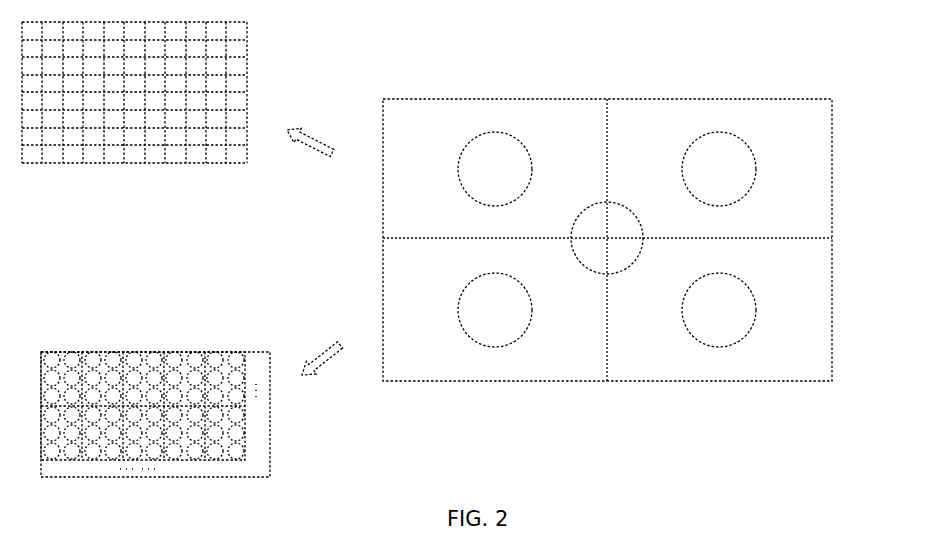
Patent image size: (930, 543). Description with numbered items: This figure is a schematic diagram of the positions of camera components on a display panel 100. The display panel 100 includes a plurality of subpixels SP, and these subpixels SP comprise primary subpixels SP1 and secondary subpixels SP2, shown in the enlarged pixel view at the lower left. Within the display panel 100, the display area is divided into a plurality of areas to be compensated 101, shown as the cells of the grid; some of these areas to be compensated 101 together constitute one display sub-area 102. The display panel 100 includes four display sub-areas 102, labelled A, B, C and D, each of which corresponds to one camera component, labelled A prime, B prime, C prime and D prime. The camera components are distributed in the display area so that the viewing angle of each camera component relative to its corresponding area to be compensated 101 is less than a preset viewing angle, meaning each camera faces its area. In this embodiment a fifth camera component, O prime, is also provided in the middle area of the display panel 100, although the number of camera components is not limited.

The display panel 100 is at (697, 99).
The area to be compensated 101 is at (157, 153).
The display sub-area 102 is at (247, 93).
The subpixel SP is at (35, 323).
The primary subpixel SP1 is at (135, 352).
The secondary subpixel SP2 is at (157, 352).